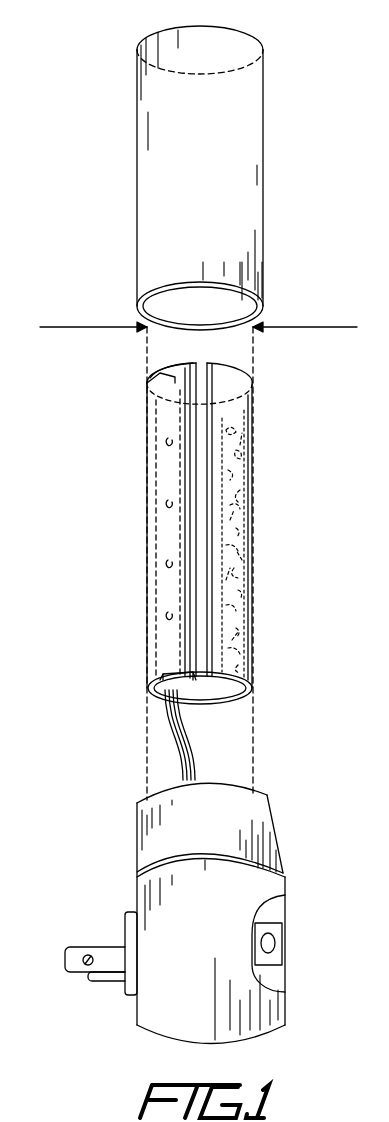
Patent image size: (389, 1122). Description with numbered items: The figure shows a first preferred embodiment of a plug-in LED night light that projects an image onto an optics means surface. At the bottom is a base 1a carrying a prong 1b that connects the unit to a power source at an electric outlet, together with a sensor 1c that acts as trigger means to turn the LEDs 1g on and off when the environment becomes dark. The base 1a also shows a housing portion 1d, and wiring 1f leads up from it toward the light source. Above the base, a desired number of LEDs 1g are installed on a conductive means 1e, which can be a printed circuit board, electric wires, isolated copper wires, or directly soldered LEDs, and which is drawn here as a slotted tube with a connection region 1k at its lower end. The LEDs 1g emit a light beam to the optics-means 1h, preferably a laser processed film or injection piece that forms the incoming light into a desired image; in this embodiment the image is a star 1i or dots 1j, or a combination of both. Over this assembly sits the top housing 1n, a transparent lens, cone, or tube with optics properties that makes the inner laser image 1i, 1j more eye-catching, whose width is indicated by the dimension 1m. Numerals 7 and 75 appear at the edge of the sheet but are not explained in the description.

The base 1a is at (130, 912).
The prong 1b is at (70, 955).
The sensor 1c is at (270, 945).
The base housing 1d is at (250, 830).
The conductive means 1e is at (165, 410).
The wires 1f is at (170, 722).
The LED 1g is at (172, 446).
The optics-means 1h is at (160, 375).
The star image 1i is at (237, 628).
The dots image 1j is at (243, 537).
The connector 1k is at (203, 676).
The diameter 1m is at (317, 326).
The top housing 1n is at (155, 152).
The unknown 7 is at (384, 711).
The unknown 75 is at (382, 135).